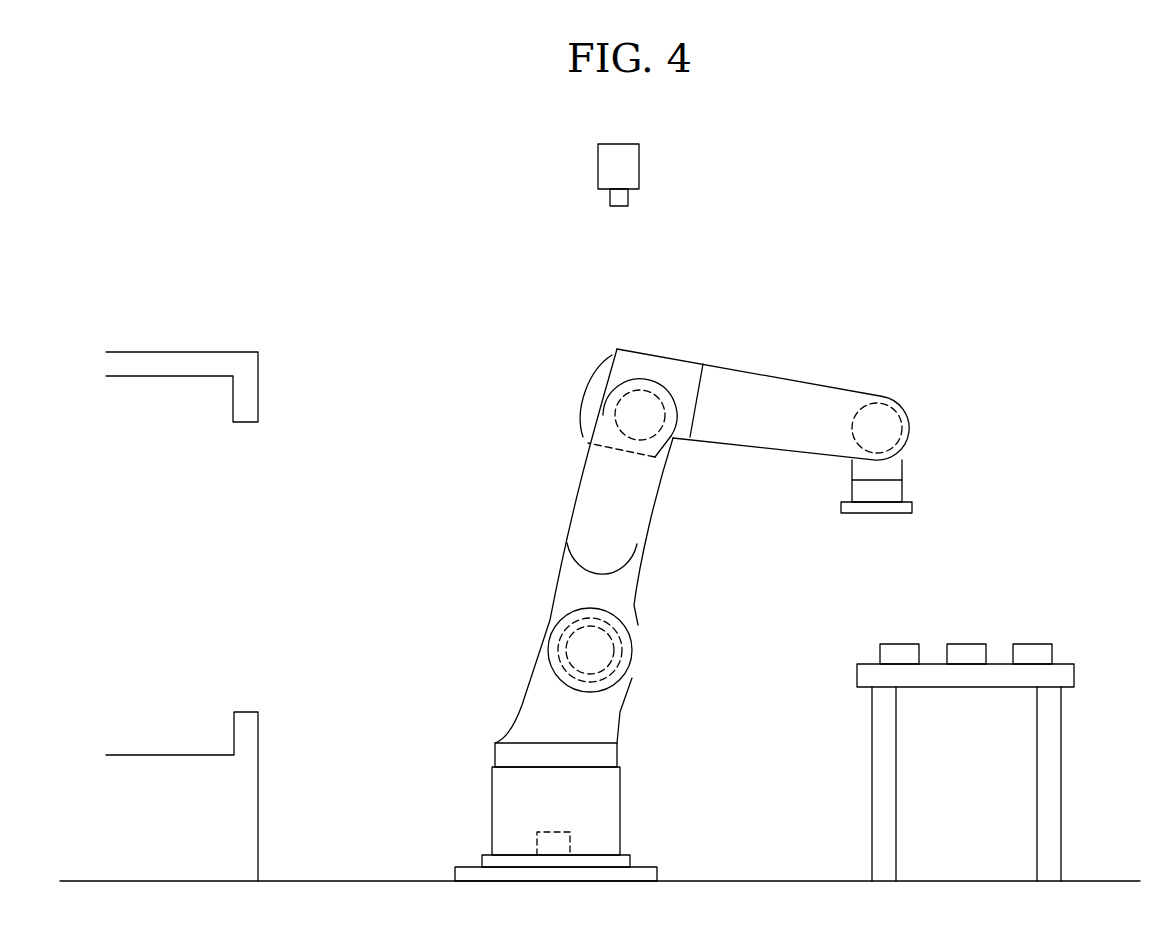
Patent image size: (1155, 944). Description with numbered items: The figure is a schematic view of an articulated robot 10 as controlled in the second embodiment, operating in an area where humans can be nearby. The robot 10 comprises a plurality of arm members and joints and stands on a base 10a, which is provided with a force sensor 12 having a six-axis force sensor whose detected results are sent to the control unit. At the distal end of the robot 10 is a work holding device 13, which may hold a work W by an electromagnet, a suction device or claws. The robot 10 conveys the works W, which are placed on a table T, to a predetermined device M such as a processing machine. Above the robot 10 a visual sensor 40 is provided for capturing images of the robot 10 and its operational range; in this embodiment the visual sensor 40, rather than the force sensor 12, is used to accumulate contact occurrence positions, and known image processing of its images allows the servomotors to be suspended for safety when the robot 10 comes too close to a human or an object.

The articulated robot 10 is at (696, 580).
The base 10a is at (492, 806).
The force sensor 12 is at (570, 838).
The work holding device 13 is at (912, 505).
The visual sensor 40 is at (639, 165).
The device M is at (206, 352).
The table T is at (1074, 673).
The work W is at (905, 644).